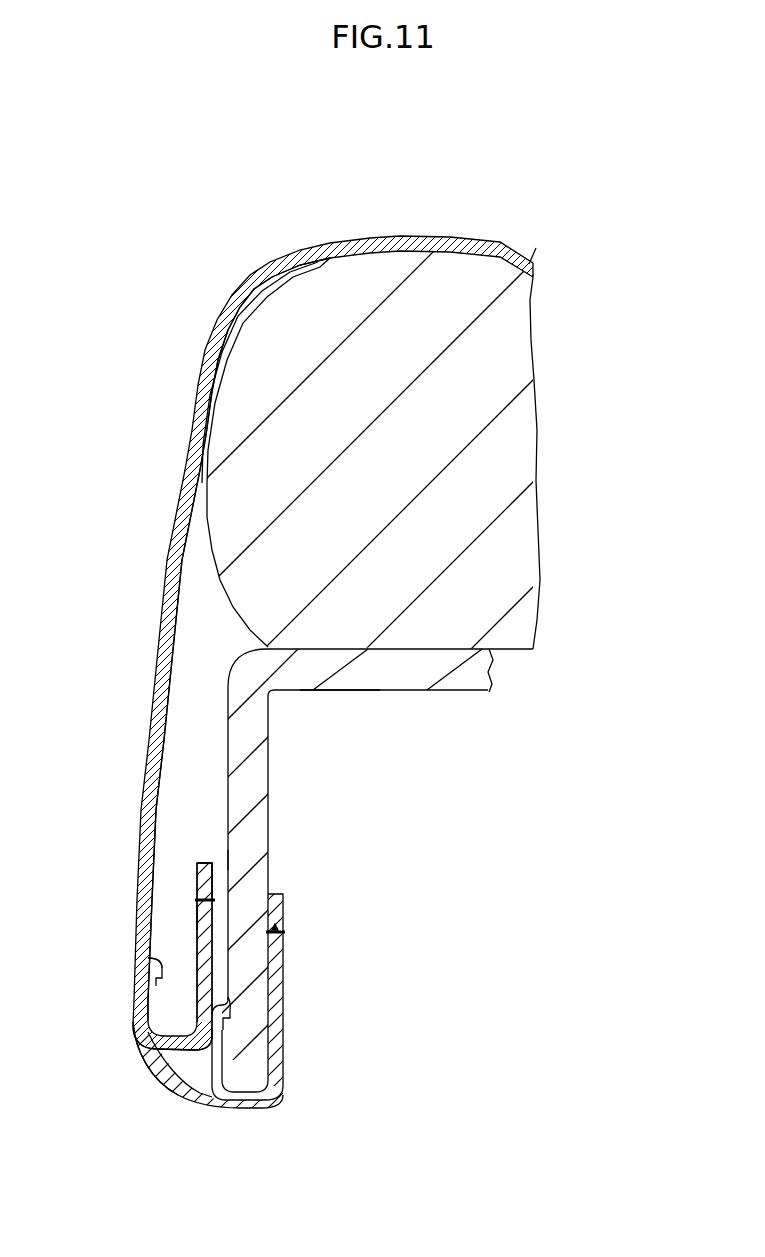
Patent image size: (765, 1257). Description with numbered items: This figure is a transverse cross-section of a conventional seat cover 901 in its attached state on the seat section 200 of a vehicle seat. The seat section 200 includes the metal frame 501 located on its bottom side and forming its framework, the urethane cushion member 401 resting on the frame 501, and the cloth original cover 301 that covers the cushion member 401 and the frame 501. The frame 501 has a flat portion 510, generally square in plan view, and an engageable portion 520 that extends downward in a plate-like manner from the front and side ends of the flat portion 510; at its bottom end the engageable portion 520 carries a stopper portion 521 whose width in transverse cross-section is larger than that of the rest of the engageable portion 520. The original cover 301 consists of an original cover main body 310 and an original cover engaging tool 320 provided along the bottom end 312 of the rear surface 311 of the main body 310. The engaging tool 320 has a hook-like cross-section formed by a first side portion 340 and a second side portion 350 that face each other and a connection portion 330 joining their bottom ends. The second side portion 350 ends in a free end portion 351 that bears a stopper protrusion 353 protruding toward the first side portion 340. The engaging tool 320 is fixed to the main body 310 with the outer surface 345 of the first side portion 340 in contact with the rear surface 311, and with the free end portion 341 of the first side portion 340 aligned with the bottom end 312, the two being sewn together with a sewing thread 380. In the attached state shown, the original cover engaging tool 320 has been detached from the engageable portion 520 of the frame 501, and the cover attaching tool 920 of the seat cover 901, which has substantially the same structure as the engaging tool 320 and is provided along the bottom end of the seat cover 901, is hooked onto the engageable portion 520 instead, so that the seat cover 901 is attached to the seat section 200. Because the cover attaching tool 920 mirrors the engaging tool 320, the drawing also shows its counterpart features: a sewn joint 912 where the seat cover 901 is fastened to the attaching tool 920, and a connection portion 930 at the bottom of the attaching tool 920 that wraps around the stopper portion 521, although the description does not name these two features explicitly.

The seat section 200 is at (601, 427).
The cushion member 401 is at (505, 357).
The original cover 301 is at (172, 669).
The original cover main body 310 is at (165, 730).
The rear surface 311 is at (182, 599).
The bottom end 312 is at (222, 858).
The original cover engaging tool 320 is at (199, 909).
The connection portion 330 is at (172, 1048).
The first side portion 340 is at (203, 934).
The free end portion 341 is at (198, 893).
The outer surface 345 is at (214, 960).
The second side portion 350 is at (150, 1013).
The free end portion 351 is at (131, 969).
The stopper protrusion 353 is at (137, 978).
The sewing thread 380 is at (197, 900).
The frame 501 is at (354, 690).
The flat portion 510 is at (388, 690).
The engageable portion 520 is at (268, 797).
The stopper portion 521 is at (243, 1062).
The seat cover 901 is at (163, 1103).
The clip 912 is at (285, 916).
The cover attaching tool 920 is at (294, 1021).
The cover bottom wall 930 is at (258, 1104).